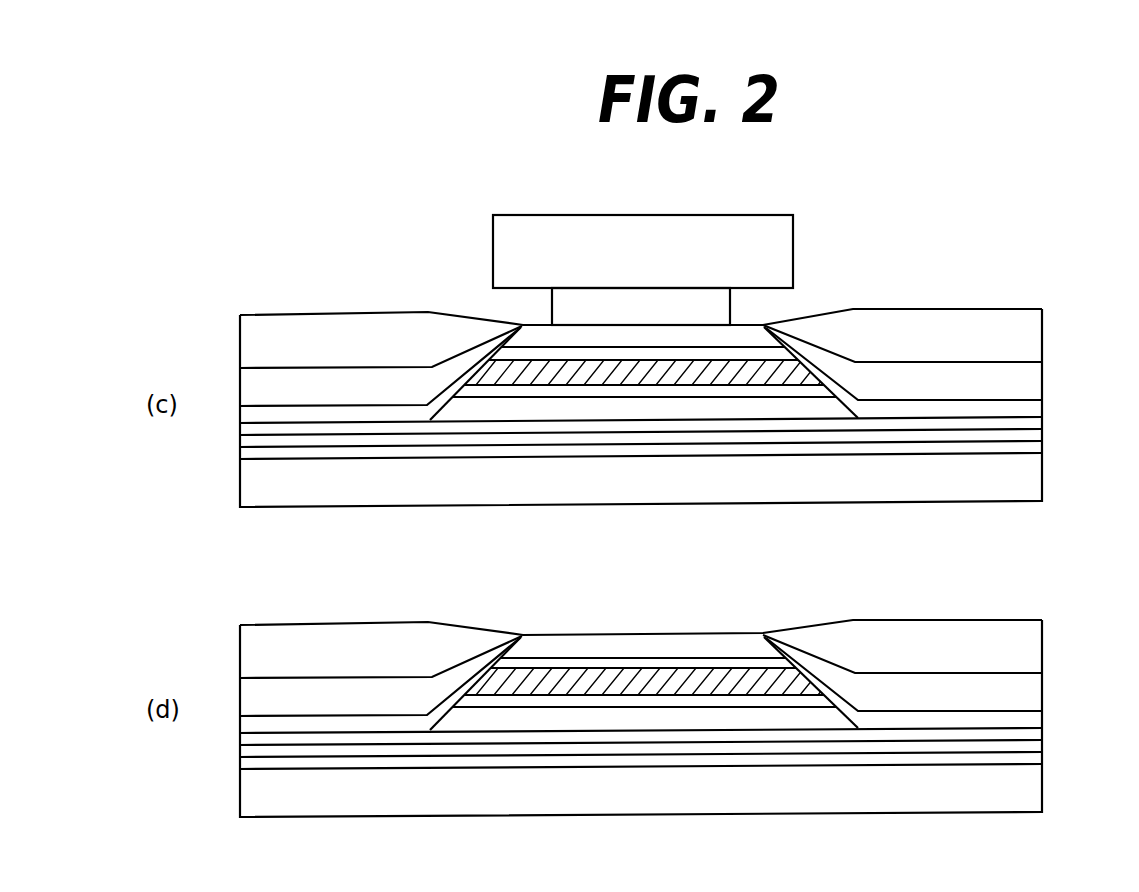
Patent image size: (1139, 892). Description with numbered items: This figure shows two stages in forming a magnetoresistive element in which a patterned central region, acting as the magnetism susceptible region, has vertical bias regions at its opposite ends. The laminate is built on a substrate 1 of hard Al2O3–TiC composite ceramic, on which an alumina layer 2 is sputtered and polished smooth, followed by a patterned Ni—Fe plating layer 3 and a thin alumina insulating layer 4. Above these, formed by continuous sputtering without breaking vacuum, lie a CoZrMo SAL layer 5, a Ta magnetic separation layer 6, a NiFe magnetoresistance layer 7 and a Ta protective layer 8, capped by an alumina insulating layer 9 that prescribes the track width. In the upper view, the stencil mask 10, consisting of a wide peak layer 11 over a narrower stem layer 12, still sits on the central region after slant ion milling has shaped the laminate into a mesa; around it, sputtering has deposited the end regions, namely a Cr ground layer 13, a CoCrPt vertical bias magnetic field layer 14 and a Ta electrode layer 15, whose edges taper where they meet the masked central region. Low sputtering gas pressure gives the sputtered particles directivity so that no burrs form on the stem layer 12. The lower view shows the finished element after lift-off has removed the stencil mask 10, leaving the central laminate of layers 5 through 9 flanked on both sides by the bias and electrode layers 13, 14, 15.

The substrate 1 is at (1005, 483).
The alumina layer 2 is at (1012, 448).
The Ni—Fe plating layer 3 is at (1033, 437).
The alumina insulating layer 4 is at (1033, 423).
The SAL layer 5 is at (708, 715).
The magnetic separation layer 6 is at (645, 705).
The magnetoresistance layer 7 is at (598, 677).
The protective layer 8 is at (565, 663).
The alumina insulating layer 9 is at (542, 332).
The stencil mask 10 is at (795, 222).
The peak layer 11 is at (782, 250).
The stem layer 12 is at (733, 300).
The ground layer 13 is at (1030, 408).
The vertical bias magnetic field layer 14 is at (1027, 378).
The electrode layer 15 is at (1027, 323).